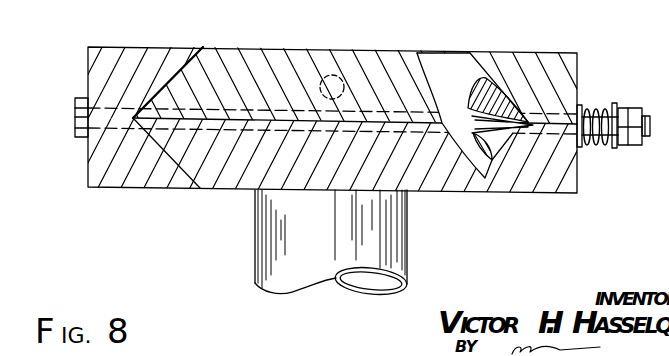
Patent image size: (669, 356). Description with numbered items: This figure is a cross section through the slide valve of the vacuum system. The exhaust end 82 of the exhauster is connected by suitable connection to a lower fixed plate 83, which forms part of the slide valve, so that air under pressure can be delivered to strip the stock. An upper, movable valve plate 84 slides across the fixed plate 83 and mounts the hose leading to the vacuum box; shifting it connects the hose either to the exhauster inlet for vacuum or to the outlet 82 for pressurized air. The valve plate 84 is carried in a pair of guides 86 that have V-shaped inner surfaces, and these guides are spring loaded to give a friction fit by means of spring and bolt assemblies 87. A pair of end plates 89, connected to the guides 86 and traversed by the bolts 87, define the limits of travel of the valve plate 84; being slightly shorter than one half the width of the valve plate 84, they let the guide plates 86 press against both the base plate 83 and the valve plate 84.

The exhaust end 82 is at (268, 259).
The lower fixed plate 83 is at (220, 178).
The upper movable valve plate 84 is at (226, 64).
The guides 86 is at (113, 176).
The spring and bolt assemblies 87 is at (620, 149).
The end plates 89 is at (445, 65).